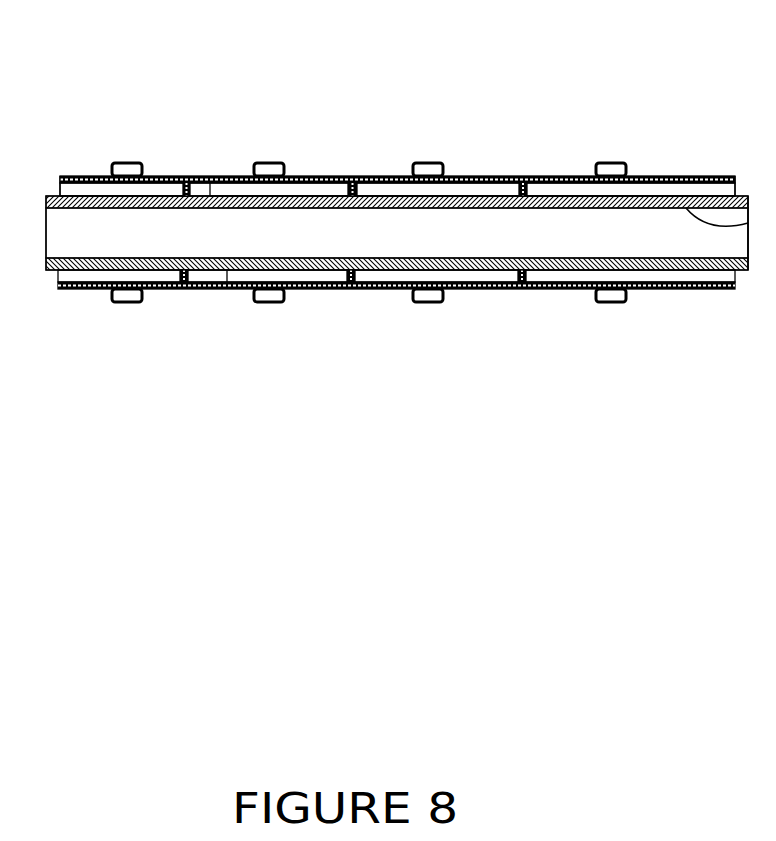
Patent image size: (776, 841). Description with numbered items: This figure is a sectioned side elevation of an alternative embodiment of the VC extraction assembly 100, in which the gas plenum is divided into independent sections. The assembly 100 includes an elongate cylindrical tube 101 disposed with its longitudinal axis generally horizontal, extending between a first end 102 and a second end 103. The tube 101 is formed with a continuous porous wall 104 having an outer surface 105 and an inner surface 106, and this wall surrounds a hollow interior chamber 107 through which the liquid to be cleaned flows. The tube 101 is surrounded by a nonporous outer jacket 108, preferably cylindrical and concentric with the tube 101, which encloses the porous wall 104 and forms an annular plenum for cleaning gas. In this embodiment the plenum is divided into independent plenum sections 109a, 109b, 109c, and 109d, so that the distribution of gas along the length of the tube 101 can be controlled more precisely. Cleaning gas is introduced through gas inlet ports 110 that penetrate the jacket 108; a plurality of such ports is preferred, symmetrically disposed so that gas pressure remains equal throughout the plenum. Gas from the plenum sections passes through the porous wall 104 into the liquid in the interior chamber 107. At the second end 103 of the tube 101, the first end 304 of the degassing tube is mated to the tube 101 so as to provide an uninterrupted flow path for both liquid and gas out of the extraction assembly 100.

The VC extraction assembly 100 is at (338, 143).
The elongate cylindrical tube 101 is at (227, 270).
The first end 102 is at (47, 233).
The second end 103 is at (747, 242).
The continuous porous wall 104 is at (485, 190).
The outer surface 105 is at (173, 268).
The inner surface 106 is at (210, 192).
The hollow interior chamber 107 is at (330, 238).
The nonporous outer jacket 108 is at (543, 185).
The plenum section 109a is at (80, 190).
The plenum section 109b is at (300, 188).
The plenum section 109c is at (393, 190).
The plenum section 109d is at (708, 190).
The gas inlet ports 110 is at (127, 163).
The first end 304 is at (683, 202).